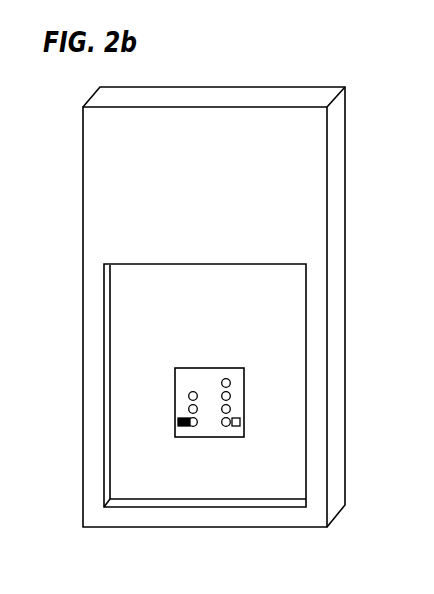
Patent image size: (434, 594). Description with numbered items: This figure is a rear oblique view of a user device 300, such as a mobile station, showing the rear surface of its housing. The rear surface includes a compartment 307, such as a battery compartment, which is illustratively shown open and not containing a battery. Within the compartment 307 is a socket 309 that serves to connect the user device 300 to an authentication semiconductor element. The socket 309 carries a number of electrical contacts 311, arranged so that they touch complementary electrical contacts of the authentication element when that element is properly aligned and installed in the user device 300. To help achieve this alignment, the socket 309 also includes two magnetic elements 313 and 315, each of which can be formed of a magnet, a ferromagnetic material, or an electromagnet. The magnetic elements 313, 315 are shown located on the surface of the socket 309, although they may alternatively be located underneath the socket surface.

The user device 300 is at (275, 72).
The compartment 307 is at (104, 313).
The socket 309 is at (216, 368).
The electrical contacts 311 is at (229, 379).
The magnetic element 313 is at (182, 428).
The magnetic element 315 is at (237, 428).